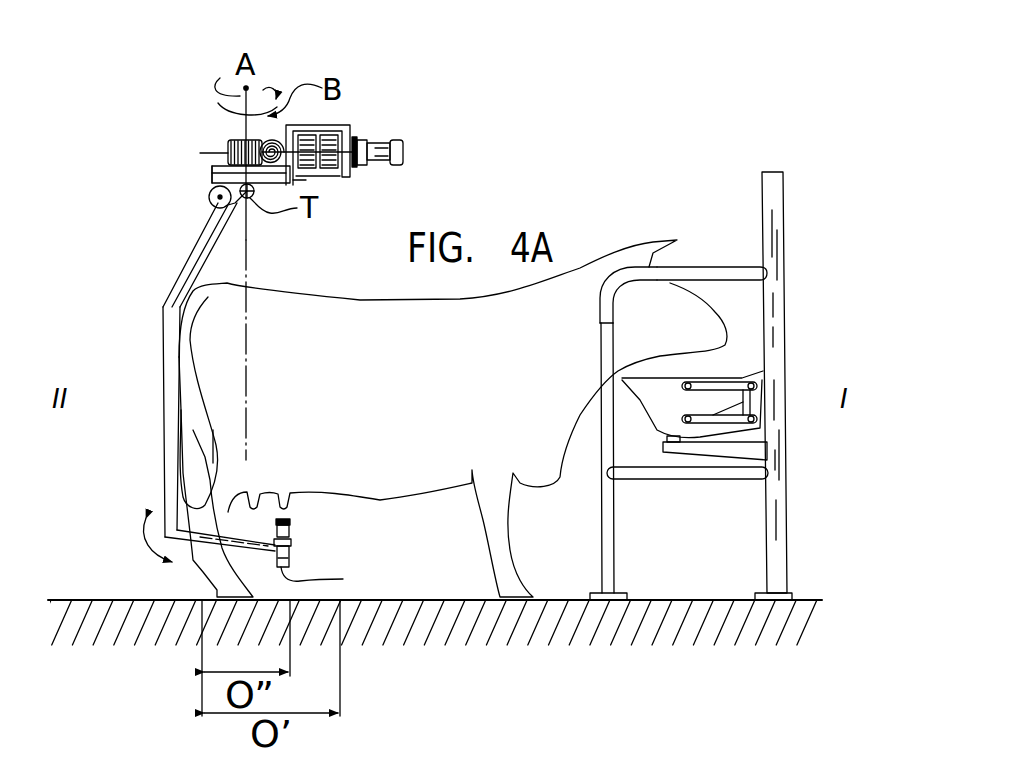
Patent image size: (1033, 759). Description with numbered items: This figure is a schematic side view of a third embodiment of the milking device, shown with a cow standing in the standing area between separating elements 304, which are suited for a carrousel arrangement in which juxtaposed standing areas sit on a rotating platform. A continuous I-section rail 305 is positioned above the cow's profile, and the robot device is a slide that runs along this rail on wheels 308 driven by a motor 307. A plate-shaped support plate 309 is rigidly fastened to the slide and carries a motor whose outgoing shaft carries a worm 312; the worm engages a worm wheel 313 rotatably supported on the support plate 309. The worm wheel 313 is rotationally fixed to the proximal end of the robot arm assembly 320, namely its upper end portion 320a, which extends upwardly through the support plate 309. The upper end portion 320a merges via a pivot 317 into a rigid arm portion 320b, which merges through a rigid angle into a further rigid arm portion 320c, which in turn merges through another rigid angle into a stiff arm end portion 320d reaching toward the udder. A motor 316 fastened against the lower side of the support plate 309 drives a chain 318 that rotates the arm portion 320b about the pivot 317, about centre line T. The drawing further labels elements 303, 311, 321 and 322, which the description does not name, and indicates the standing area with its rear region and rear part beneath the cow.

The feed trough 303 is at (694, 415).
The separating element 304 is at (714, 272).
The I-section rail 305 is at (318, 176).
The motor 307 is at (372, 157).
The wheels 308 is at (330, 147).
The support plate 309 is at (220, 168).
The support frame bracket 311 is at (343, 129).
The worm 312 is at (228, 142).
The worm wheel 313 is at (228, 160).
The motor 316 is at (235, 203).
The pivot 317 is at (304, 180).
The chain 318 is at (243, 225).
The robot arm assembly 320 is at (183, 282).
The upper end portion 320a is at (206, 166).
The rigid arm portion 320b is at (197, 265).
The rigid arm portion 320c is at (171, 396).
The stiff arm end portion 320d is at (195, 537).
The teat cup holder 321 is at (290, 546).
The teat cup sensor 322 is at (284, 531).